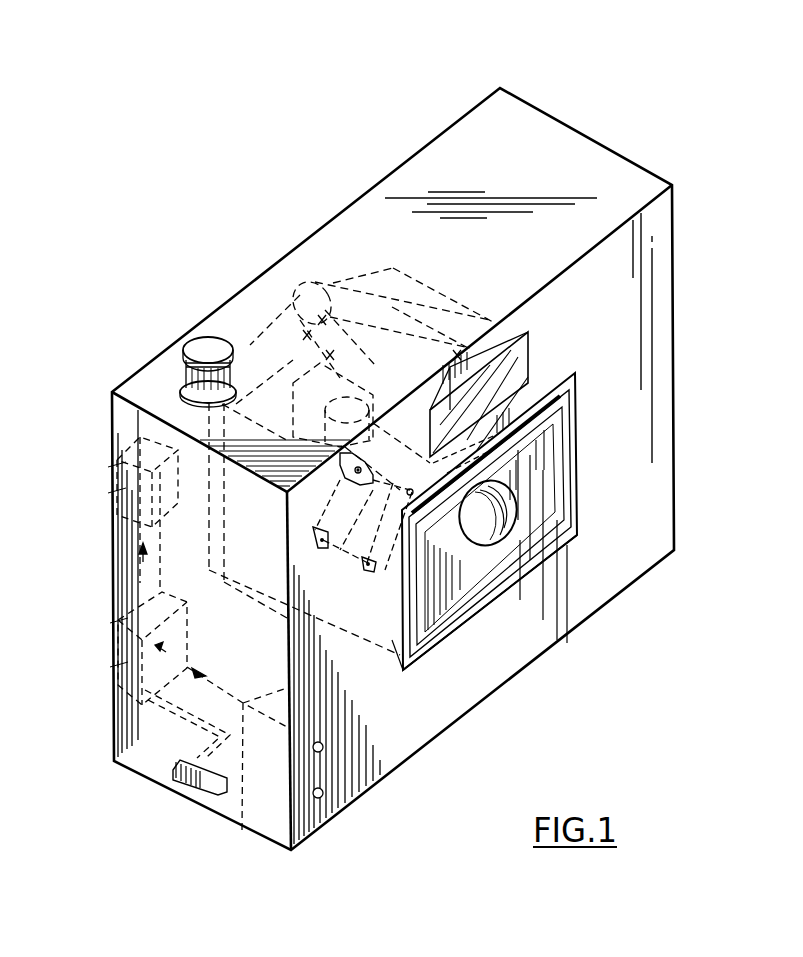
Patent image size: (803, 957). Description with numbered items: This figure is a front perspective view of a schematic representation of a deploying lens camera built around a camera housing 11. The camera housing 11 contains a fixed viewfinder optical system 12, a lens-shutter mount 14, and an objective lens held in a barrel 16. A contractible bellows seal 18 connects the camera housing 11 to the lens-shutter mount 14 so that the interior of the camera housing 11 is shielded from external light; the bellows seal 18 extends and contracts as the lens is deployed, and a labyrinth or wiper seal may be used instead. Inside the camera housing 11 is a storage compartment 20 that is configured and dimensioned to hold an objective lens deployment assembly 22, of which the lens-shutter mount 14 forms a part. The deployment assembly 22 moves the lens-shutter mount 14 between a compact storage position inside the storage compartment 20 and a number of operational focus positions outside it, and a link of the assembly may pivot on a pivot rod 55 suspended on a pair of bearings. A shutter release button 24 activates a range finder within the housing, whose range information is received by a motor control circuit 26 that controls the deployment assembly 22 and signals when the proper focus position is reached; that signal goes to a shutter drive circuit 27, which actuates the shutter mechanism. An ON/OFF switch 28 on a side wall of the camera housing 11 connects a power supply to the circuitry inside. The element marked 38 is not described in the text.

The camera housing 11 is at (343, 235).
The fixed viewfinder optical system 12 is at (518, 362).
The lens-shutter mount 14 is at (544, 458).
The barrel 16 is at (516, 512).
The contractible bellows seal 18 is at (490, 600).
The storage compartment 20 is at (363, 636).
The objective lens deployment assembly 22 is at (350, 570).
The shutter release button 24 is at (216, 340).
The motor control circuit 26 is at (123, 664).
The shutter drive circuit 27 is at (127, 488).
The ON/OFF switch 28 is at (181, 776).
The lens 38 is at (493, 520).
The pivot rod 55 is at (370, 430).